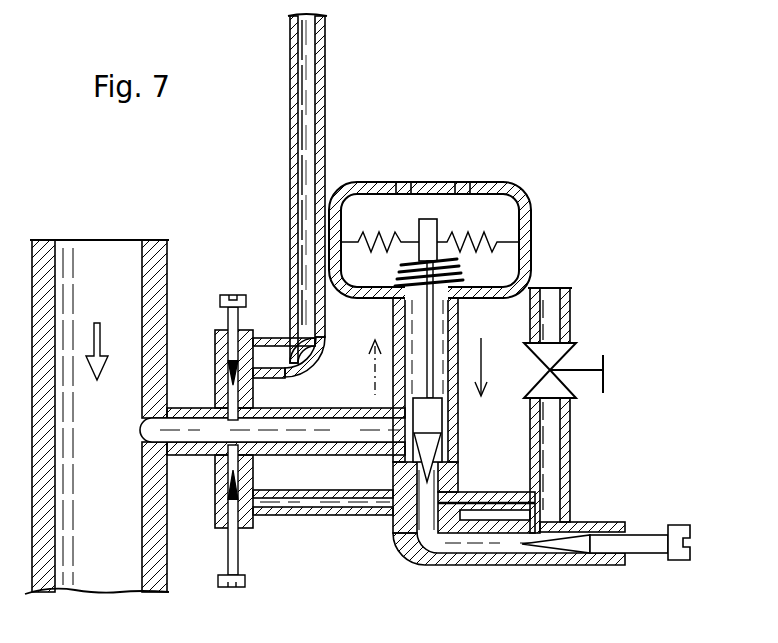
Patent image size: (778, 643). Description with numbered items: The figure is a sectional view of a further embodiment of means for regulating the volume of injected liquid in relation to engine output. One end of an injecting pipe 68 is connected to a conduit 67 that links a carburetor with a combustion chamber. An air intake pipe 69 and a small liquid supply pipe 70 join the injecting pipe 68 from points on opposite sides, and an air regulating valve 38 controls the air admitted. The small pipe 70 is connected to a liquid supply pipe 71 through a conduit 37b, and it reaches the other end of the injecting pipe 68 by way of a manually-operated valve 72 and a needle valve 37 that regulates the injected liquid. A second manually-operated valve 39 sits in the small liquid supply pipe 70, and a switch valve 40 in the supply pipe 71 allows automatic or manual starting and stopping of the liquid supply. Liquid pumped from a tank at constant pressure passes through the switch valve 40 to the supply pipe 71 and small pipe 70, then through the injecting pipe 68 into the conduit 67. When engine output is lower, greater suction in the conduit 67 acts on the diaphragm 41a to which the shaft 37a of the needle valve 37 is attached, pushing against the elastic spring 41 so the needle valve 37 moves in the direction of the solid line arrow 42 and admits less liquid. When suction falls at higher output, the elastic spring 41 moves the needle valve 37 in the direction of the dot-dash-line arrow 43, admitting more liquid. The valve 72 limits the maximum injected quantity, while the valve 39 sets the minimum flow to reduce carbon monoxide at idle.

The conduit 67 is at (120, 250).
The injecting pipe 68 is at (198, 450).
The air intake pipe 69 is at (308, 90).
The small liquid supply pipe 70 is at (313, 507).
The liquid supply pipe 71 is at (550, 443).
The manually-operated valve 72 is at (650, 543).
The needle valve 37 is at (438, 436).
The shaft of needle valve 37a is at (424, 309).
The conduit 37b is at (428, 545).
The air regulating valve 38 is at (226, 292).
The manually-operated valve 39 is at (240, 586).
The switch valve 40 is at (562, 357).
The elastic spring 41 is at (455, 272).
The diaphragm 41a is at (497, 232).
The solid line arrow 42 is at (484, 350).
The dot-dash-line arrow 43 is at (375, 393).